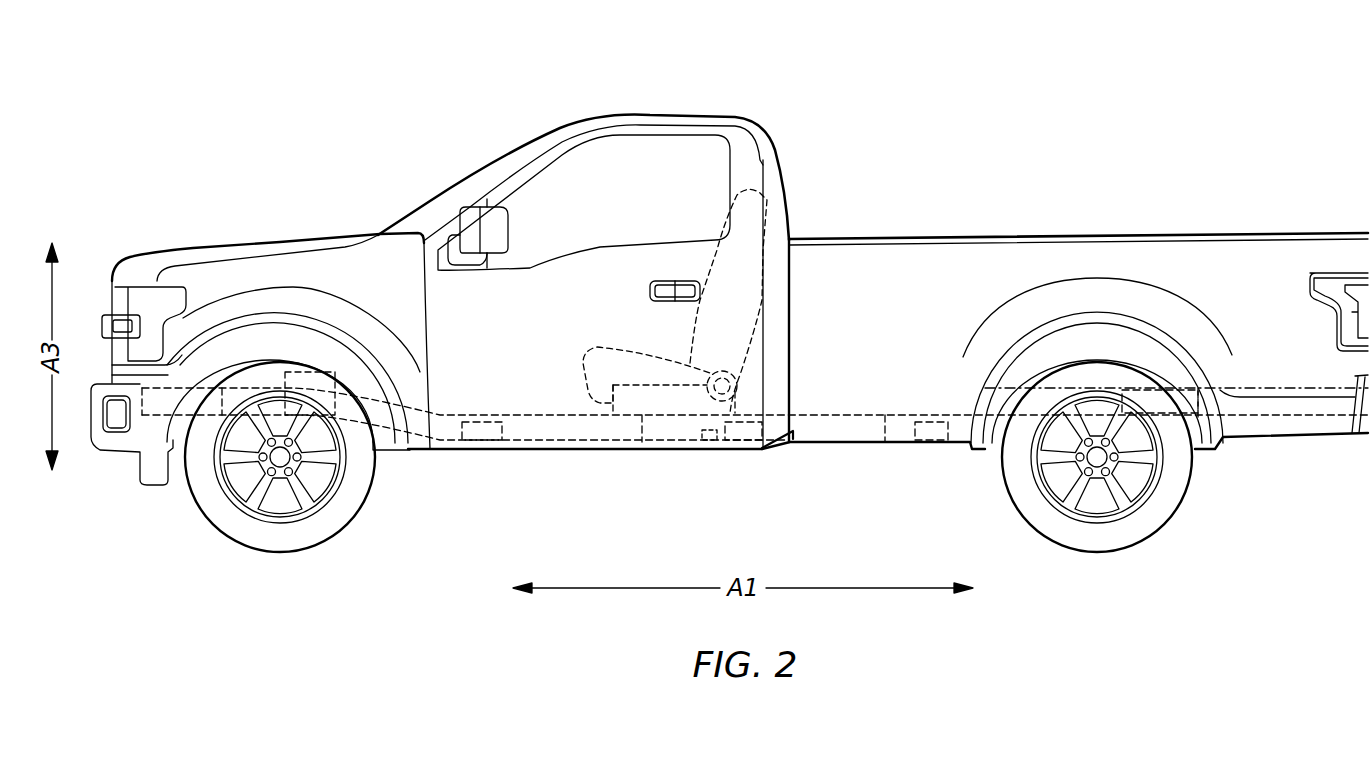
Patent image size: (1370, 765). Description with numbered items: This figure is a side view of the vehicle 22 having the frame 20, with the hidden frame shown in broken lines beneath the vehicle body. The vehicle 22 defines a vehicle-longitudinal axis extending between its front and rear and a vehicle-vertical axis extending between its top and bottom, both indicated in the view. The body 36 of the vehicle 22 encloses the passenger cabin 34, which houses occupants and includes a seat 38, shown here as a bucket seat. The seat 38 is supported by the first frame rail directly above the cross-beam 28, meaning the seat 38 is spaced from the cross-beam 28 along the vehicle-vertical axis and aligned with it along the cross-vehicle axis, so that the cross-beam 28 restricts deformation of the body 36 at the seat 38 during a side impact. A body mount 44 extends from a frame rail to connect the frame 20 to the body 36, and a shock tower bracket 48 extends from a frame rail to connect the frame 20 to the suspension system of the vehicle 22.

The frame 20 is at (548, 451).
The vehicle 22 is at (308, 233).
The cross-beam 28 is at (702, 446).
The passenger cabin 34 is at (632, 160).
The body 36 is at (706, 118).
The seat 38 is at (772, 215).
The body mount 44 is at (780, 440).
The shock tower bracket 48 is at (338, 372).